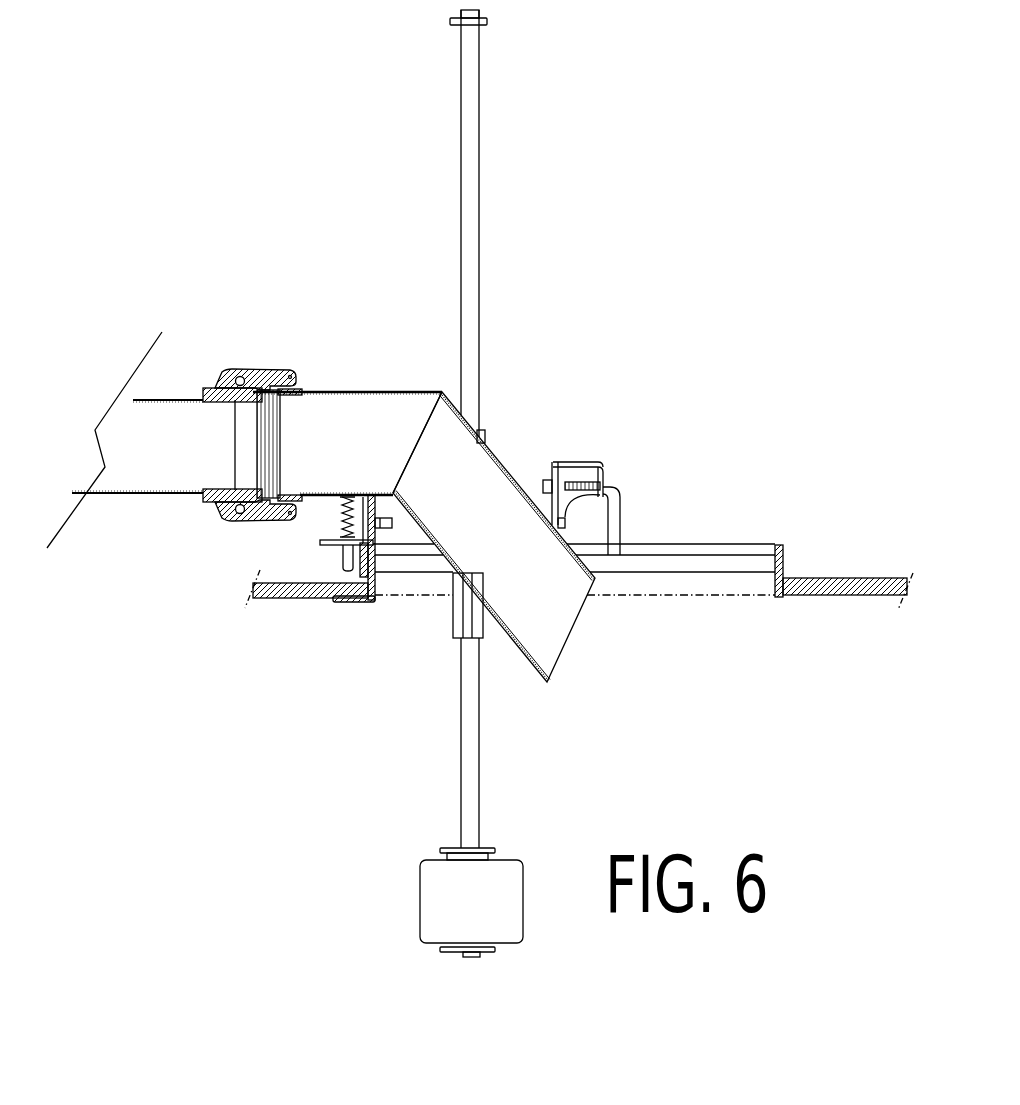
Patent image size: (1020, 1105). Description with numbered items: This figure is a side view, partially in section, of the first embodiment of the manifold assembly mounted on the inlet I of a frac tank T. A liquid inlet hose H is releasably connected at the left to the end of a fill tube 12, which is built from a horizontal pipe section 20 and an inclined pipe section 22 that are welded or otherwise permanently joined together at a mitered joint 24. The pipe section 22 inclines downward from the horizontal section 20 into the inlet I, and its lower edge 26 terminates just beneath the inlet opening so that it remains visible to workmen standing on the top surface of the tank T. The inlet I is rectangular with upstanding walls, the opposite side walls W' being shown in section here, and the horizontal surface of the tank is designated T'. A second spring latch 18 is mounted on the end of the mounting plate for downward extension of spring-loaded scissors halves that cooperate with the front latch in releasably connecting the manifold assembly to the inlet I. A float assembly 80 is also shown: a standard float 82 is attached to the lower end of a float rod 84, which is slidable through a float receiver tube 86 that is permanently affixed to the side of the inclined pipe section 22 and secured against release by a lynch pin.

The fill tube 12 is at (502, 436).
The second spring latch 18 is at (614, 447).
The horizontal pipe section 20 is at (358, 390).
The inclined pipe section 22 is at (450, 572).
The mitered joint 24 is at (426, 428).
The lower edge of the pipe section 26 is at (568, 645).
The float assembly 80 is at (489, 215).
The float 82 is at (418, 902).
The float rod 84 is at (460, 743).
The float receiver tube 86 is at (485, 642).
The liquid inlet hose H is at (163, 495).
The inlet I is at (710, 545).
The side wall W' is at (562, 548).
The horizontal surface of the tank T' is at (277, 652).
The frac tank T is at (848, 662).